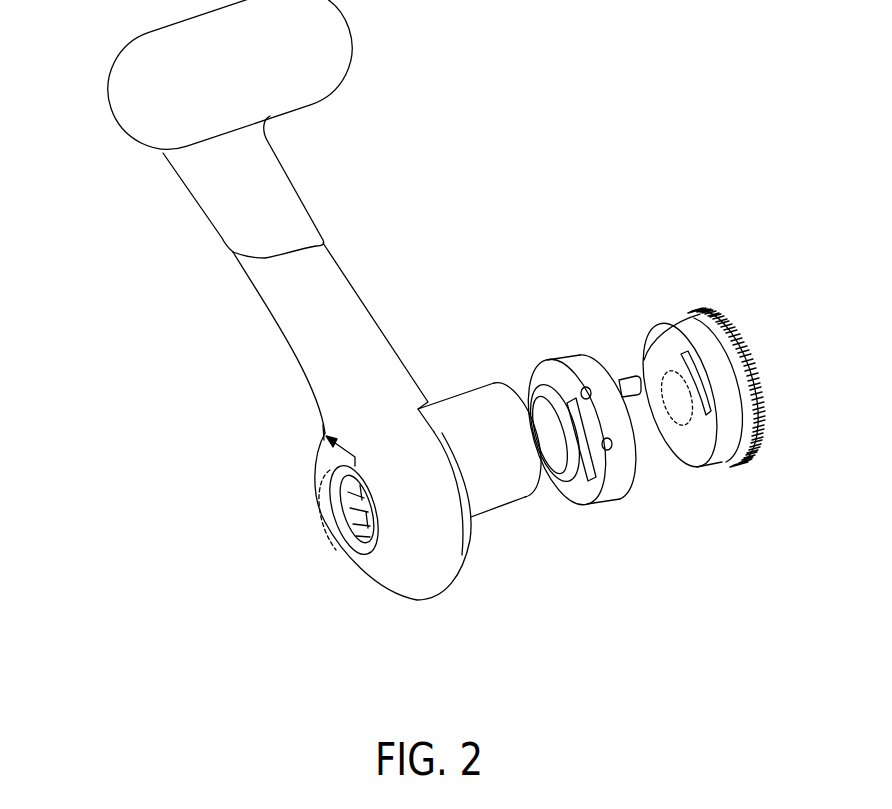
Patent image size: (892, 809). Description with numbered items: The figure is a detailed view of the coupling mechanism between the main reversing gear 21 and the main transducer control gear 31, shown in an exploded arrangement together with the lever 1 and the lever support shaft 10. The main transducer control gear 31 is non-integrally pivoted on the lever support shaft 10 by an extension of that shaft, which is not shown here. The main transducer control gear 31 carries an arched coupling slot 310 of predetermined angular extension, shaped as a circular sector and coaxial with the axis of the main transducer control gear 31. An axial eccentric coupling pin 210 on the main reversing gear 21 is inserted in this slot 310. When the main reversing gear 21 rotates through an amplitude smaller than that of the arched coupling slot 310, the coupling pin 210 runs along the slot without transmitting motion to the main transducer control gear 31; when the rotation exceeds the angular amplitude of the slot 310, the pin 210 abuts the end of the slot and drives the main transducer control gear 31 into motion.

The handle 1 is at (340, 263).
The lever support shaft 10 is at (559, 476).
The main reversing gear 21 is at (575, 360).
The axial eccentric coupling pin 210 is at (630, 368).
The main transducer control gear 31 is at (723, 470).
The arched coupling slot 310 is at (688, 364).